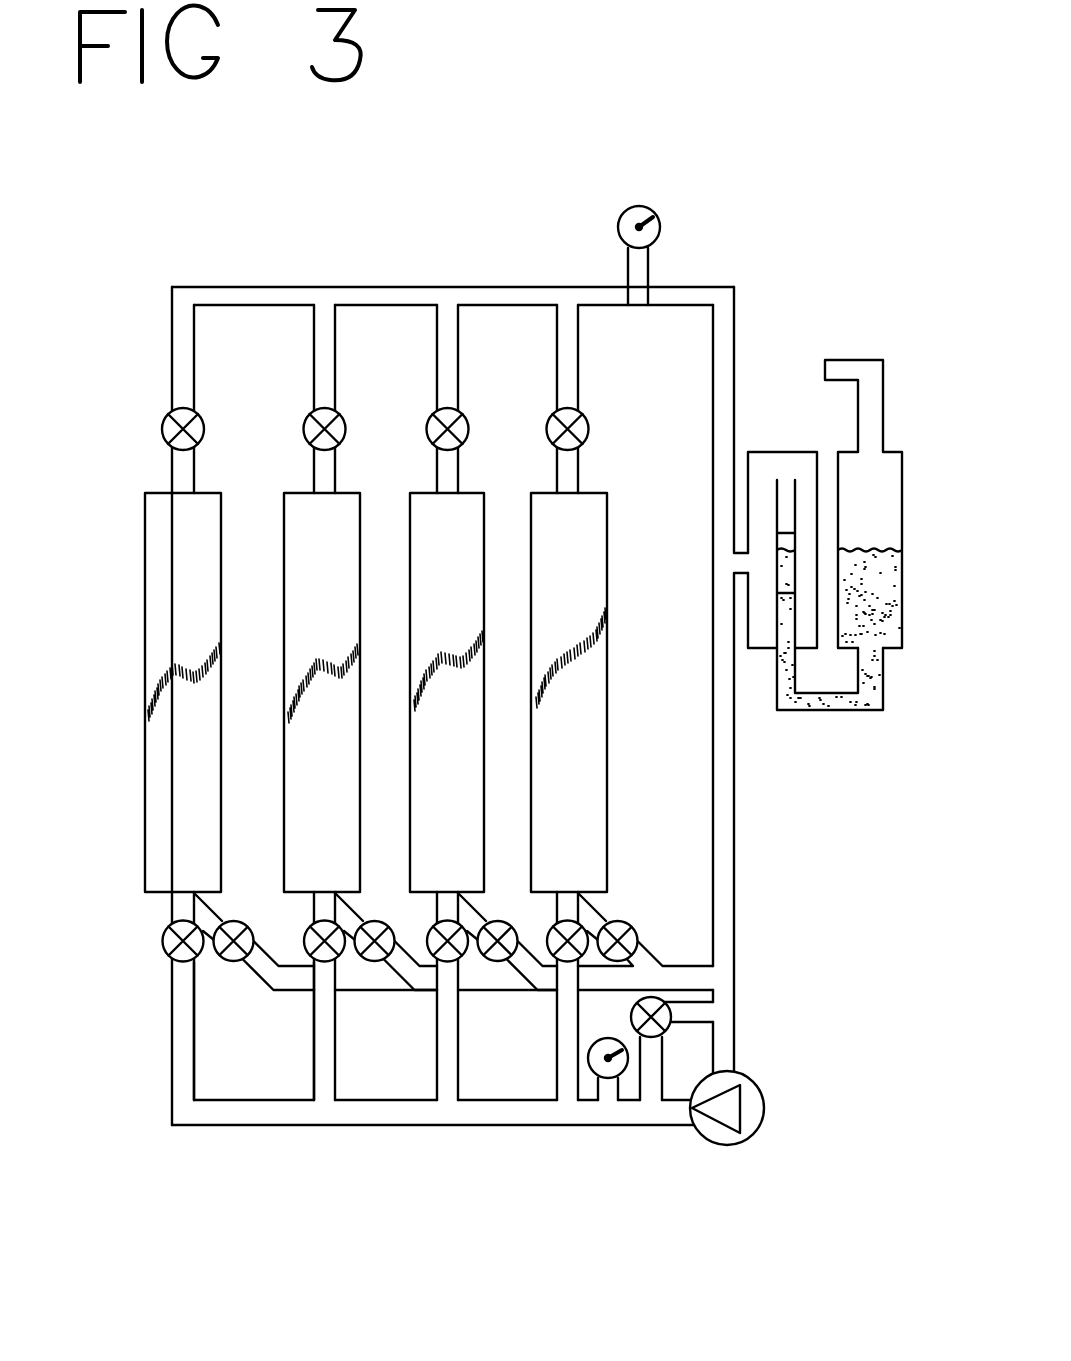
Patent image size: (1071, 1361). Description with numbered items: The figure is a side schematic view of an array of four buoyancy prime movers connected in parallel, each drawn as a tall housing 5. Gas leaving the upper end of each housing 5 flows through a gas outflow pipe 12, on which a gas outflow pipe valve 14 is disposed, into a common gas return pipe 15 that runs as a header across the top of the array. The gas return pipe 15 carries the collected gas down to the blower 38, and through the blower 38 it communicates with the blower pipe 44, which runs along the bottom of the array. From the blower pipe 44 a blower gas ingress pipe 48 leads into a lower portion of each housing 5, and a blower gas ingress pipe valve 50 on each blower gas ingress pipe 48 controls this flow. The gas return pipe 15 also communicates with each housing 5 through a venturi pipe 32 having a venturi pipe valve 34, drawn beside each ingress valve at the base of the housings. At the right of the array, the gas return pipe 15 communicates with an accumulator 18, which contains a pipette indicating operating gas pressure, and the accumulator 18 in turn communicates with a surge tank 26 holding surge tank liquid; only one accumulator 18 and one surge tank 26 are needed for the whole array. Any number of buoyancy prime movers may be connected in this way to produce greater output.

The housing 5 is at (284, 675).
The gas outflow pipe 12 is at (314, 369).
The gas outflow pipe valve 14 is at (304, 430).
The gas return pipe 15 is at (370, 287).
The accumulator 18 is at (787, 452).
The surge tank 26 is at (904, 497).
The venturi pipe 32 is at (496, 991).
The venturi pipe valve 34 is at (243, 925).
The blower 38 is at (765, 1092).
The blower pipe 44 is at (433, 1126).
The blower gas ingress pipe 48 is at (314, 1045).
The blower gas ingress pipe valve 50 is at (163, 941).